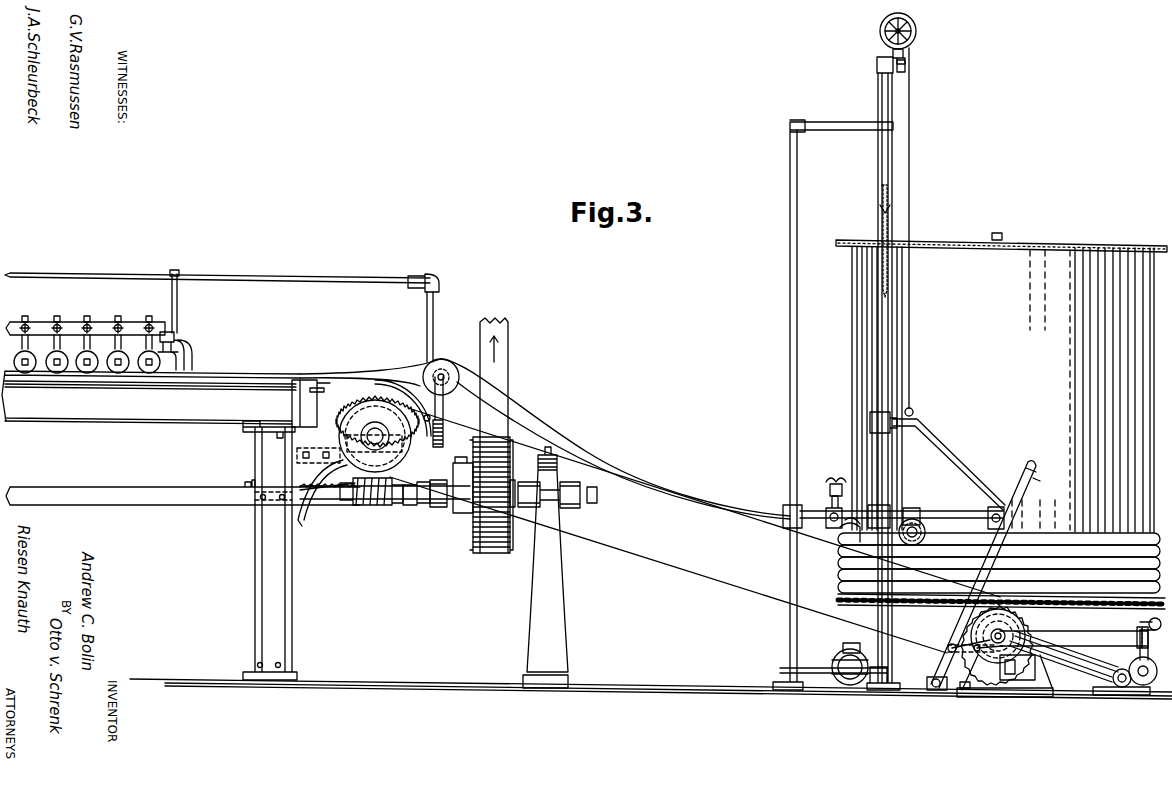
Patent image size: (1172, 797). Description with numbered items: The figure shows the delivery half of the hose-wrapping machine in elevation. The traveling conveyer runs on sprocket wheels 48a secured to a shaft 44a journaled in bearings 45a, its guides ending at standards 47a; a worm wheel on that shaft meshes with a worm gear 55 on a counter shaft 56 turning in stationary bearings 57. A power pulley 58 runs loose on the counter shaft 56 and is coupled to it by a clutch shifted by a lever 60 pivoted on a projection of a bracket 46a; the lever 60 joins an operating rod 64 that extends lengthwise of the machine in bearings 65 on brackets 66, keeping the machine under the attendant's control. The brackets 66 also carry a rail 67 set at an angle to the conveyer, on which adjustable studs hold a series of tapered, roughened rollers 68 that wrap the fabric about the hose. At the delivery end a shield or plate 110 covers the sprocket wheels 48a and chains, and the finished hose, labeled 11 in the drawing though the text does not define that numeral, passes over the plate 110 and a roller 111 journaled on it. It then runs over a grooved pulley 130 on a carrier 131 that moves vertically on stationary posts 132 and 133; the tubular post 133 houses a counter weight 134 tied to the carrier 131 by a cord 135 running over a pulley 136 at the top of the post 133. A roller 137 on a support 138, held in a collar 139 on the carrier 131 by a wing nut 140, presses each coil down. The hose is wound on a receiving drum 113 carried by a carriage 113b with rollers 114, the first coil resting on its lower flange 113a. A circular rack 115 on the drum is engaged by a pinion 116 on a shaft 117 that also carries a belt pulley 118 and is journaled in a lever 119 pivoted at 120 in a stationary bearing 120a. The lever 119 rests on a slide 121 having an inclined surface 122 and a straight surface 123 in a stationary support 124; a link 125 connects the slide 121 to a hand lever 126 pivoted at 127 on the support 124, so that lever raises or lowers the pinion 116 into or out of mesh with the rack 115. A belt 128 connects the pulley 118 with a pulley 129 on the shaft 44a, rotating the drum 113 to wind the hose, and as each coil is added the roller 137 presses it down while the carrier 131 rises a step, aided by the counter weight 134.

The strip 11 is at (584, 461).
The shaft 44a is at (392, 478).
The bearings 45a is at (377, 434).
The bracket 46a is at (322, 499).
The standards 47a is at (286, 604).
The sprocket wheels 48a is at (297, 413).
The worm gear 55 is at (375, 506).
The counter shaft 56 is at (336, 504).
The stationary bearings 57 is at (574, 507).
The power pulley 58 is at (476, 541).
The lever 60 is at (435, 308).
The operating rod 64 is at (300, 281).
The bearings 65 is at (178, 300).
The brackets 66 is at (184, 354).
The rail 67 is at (77, 324).
The tapered or conical rollers 68 is at (115, 372).
The shield or plate 110 is at (444, 407).
The roller 111 is at (450, 370).
The receiving drum 113 is at (1003, 389).
The lower flange 113a is at (830, 612).
The carriage 113b is at (1124, 641).
The rollers 114 is at (1132, 664).
The circular rack 115 is at (1001, 610).
The pinion 116 is at (1028, 621).
The shaft 117 is at (993, 656).
The belt pulley 118 is at (1006, 657).
The lever 119 is at (1098, 667).
The pivot 120 is at (1121, 688).
The stationary bearing 120a is at (1136, 690).
The slide 121 is at (1030, 667).
The inclined surface 122 is at (1050, 650).
The straight surface 123 is at (1000, 662).
The stationary support 124 is at (962, 683).
The link 125 is at (962, 638).
The operating hand lever 126 is at (1026, 479).
The pivot 127 is at (933, 690).
The belt 128 is at (708, 573).
The pulley 129 is at (366, 404).
The grooved pulley 130 is at (926, 527).
The carrier 131 is at (960, 459).
The stationary post 132 is at (790, 362).
The post 133 is at (893, 165).
The counter weight 134 is at (892, 236).
The cord 135 is at (913, 305).
The pulley 136 is at (918, 35).
The roller 137 is at (848, 546).
The support 138 is at (838, 528).
The collar 139 is at (832, 507).
The wing nut 140 is at (838, 481).